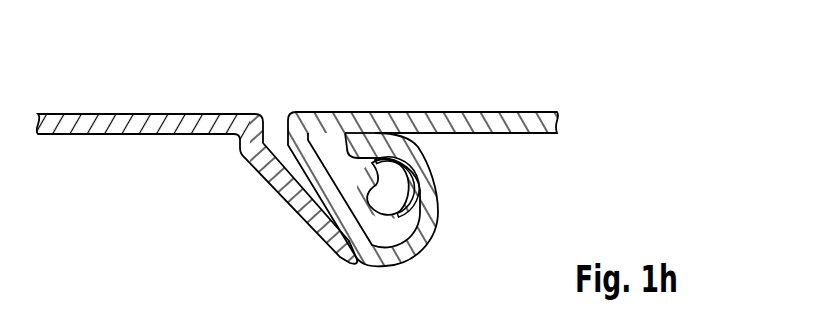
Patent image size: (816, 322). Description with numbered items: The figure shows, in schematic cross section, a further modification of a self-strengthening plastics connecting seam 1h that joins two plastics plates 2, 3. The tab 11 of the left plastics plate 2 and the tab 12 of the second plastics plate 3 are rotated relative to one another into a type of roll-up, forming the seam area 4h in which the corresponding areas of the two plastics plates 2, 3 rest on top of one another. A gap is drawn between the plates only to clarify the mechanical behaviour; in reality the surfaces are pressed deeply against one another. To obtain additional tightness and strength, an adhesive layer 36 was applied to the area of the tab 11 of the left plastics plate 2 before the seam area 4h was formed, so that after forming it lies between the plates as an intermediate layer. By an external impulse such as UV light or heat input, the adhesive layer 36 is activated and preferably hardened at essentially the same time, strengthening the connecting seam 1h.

The plastics plate 2 is at (157, 123).
The plastics plate 3 is at (450, 124).
The tab area 11 is at (323, 233).
The seam area 4h is at (452, 241).
The adhesive layer 36 is at (408, 166).
The tab area 12 is at (397, 197).
The plastics connecting seam 1h is at (541, 79).